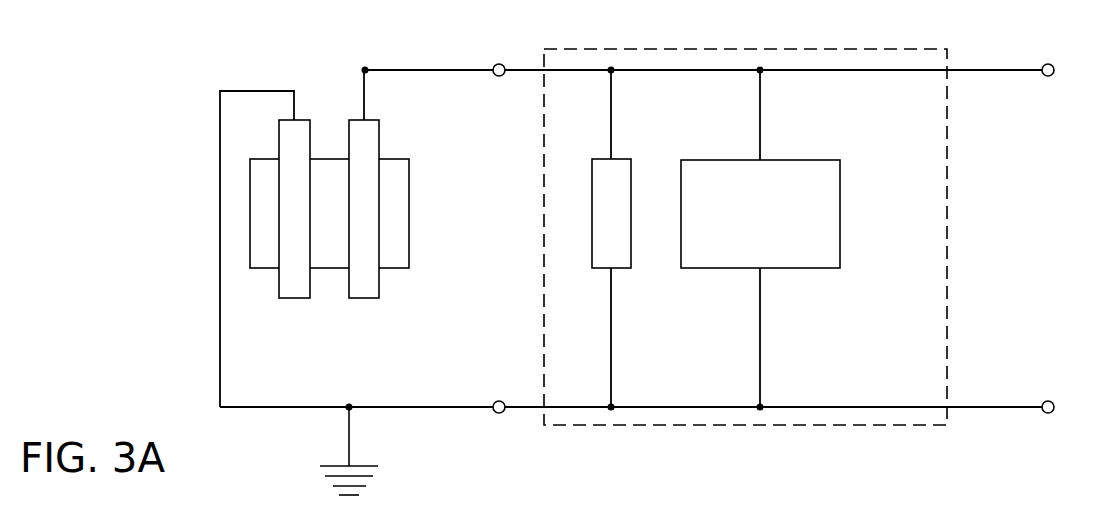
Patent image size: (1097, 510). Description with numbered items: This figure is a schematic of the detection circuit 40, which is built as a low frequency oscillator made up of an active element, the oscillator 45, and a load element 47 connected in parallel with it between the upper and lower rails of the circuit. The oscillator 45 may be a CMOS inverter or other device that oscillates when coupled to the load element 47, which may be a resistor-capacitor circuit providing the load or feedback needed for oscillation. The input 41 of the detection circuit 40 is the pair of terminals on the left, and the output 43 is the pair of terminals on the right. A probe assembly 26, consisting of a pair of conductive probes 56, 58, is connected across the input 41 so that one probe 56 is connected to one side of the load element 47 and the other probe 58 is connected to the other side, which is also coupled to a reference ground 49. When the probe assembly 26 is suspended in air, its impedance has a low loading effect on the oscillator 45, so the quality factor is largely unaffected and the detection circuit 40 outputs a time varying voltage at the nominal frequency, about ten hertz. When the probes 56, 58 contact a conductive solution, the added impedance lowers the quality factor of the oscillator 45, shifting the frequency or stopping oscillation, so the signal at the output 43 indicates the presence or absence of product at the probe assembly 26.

The probe assembly 26 is at (331, 255).
The conductive probe 58 is at (289, 283).
The conductive probe 56 is at (384, 224).
The input 41 is at (498, 398).
The output 43 is at (1049, 80).
The detection circuit 40 is at (947, 127).
The load element 47 is at (611, 158).
The oscillator 45 is at (840, 174).
The reference ground 49 is at (348, 438).